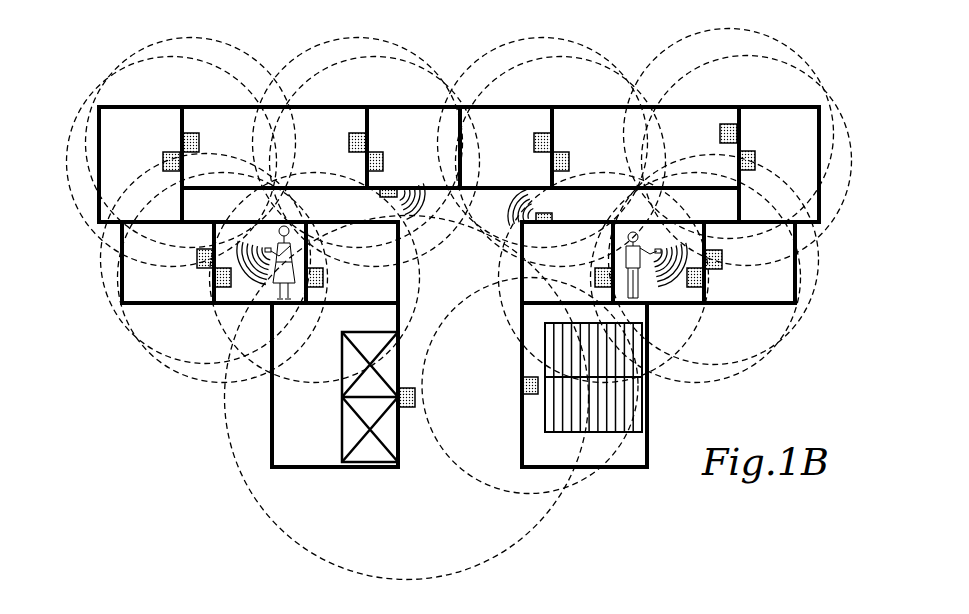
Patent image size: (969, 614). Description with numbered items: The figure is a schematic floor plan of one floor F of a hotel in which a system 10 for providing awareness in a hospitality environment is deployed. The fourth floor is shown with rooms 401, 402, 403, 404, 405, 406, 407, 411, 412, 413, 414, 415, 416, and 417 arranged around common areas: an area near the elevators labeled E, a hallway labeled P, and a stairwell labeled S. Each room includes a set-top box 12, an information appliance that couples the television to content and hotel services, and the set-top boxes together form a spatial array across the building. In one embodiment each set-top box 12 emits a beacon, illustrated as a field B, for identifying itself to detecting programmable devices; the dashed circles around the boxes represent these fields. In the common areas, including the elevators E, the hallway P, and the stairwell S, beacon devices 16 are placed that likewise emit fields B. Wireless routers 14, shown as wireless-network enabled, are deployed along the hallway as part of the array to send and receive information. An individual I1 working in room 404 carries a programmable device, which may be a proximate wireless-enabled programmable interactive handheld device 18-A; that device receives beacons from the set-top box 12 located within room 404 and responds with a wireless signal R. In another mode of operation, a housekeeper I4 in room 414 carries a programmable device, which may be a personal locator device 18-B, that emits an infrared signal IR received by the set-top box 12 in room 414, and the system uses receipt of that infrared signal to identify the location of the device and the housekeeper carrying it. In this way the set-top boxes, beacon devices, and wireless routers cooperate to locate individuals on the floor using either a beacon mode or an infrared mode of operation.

The system 10 is at (114, 55).
The set-top box 12 is at (192, 133).
The wireless router 14 is at (397, 190).
The beacon device 16 is at (416, 397).
The proximate wireless-enabled programmable interactive handheld device 18-A is at (654, 245).
The personal locator device 18-B is at (270, 246).
The individual I1 is at (624, 258).
The housekeeper I4 is at (292, 290).
The infrared signal IR is at (240, 272).
The wireless signal R is at (582, 43).
The field B is at (747, 370).
The floor F is at (803, 104).
The hallway P is at (467, 251).
The elevators E is at (466, 444).
The stairwell S is at (577, 416).
The room 401 is at (506, 147).
The room 402 is at (567, 262).
The room 403 is at (645, 147).
The room 404 is at (658, 262).
The room 405 is at (645, 147).
The room 406 is at (749, 262).
The room 407 is at (779, 164).
The room 411 is at (413, 147).
The room 412 is at (352, 262).
The room 413 is at (384, 147).
The room 414 is at (260, 262).
The room 415 is at (274, 147).
The room 416 is at (168, 262).
The room 417 is at (140, 164).